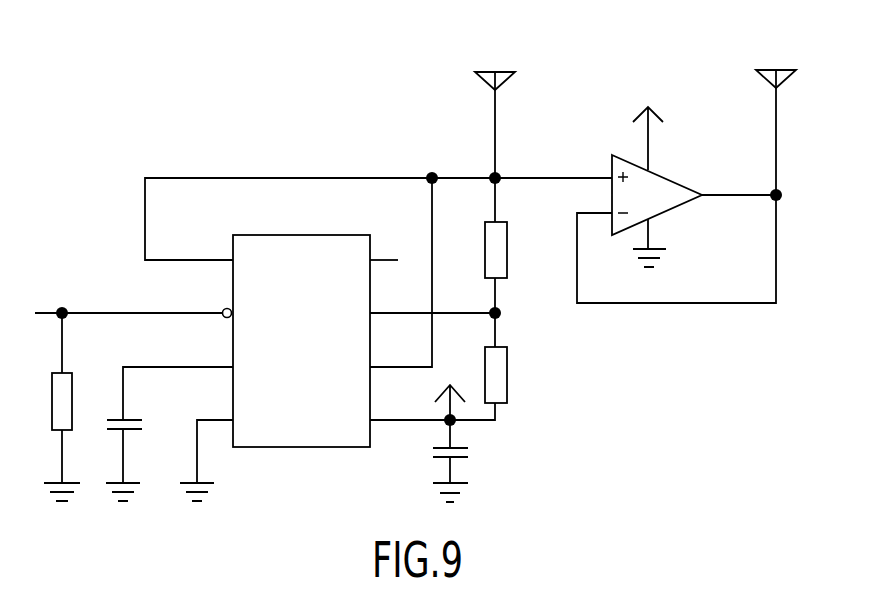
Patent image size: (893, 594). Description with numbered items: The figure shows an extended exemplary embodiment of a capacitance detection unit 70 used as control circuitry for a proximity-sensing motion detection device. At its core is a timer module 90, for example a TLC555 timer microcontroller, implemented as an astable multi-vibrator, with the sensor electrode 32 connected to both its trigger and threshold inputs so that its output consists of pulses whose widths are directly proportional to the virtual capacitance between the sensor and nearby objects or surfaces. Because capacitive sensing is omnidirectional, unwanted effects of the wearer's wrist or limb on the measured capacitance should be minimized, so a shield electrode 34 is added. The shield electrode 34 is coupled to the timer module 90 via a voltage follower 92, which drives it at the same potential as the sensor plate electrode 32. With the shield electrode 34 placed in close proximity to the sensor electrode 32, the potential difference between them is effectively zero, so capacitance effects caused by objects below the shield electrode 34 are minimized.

The capacitance detection unit 70 is at (105, 214).
The timer module 90 is at (290, 248).
The sensor electrode 32 is at (493, 70).
The shield electrode 34 is at (790, 68).
The voltage follower 92 is at (660, 198).